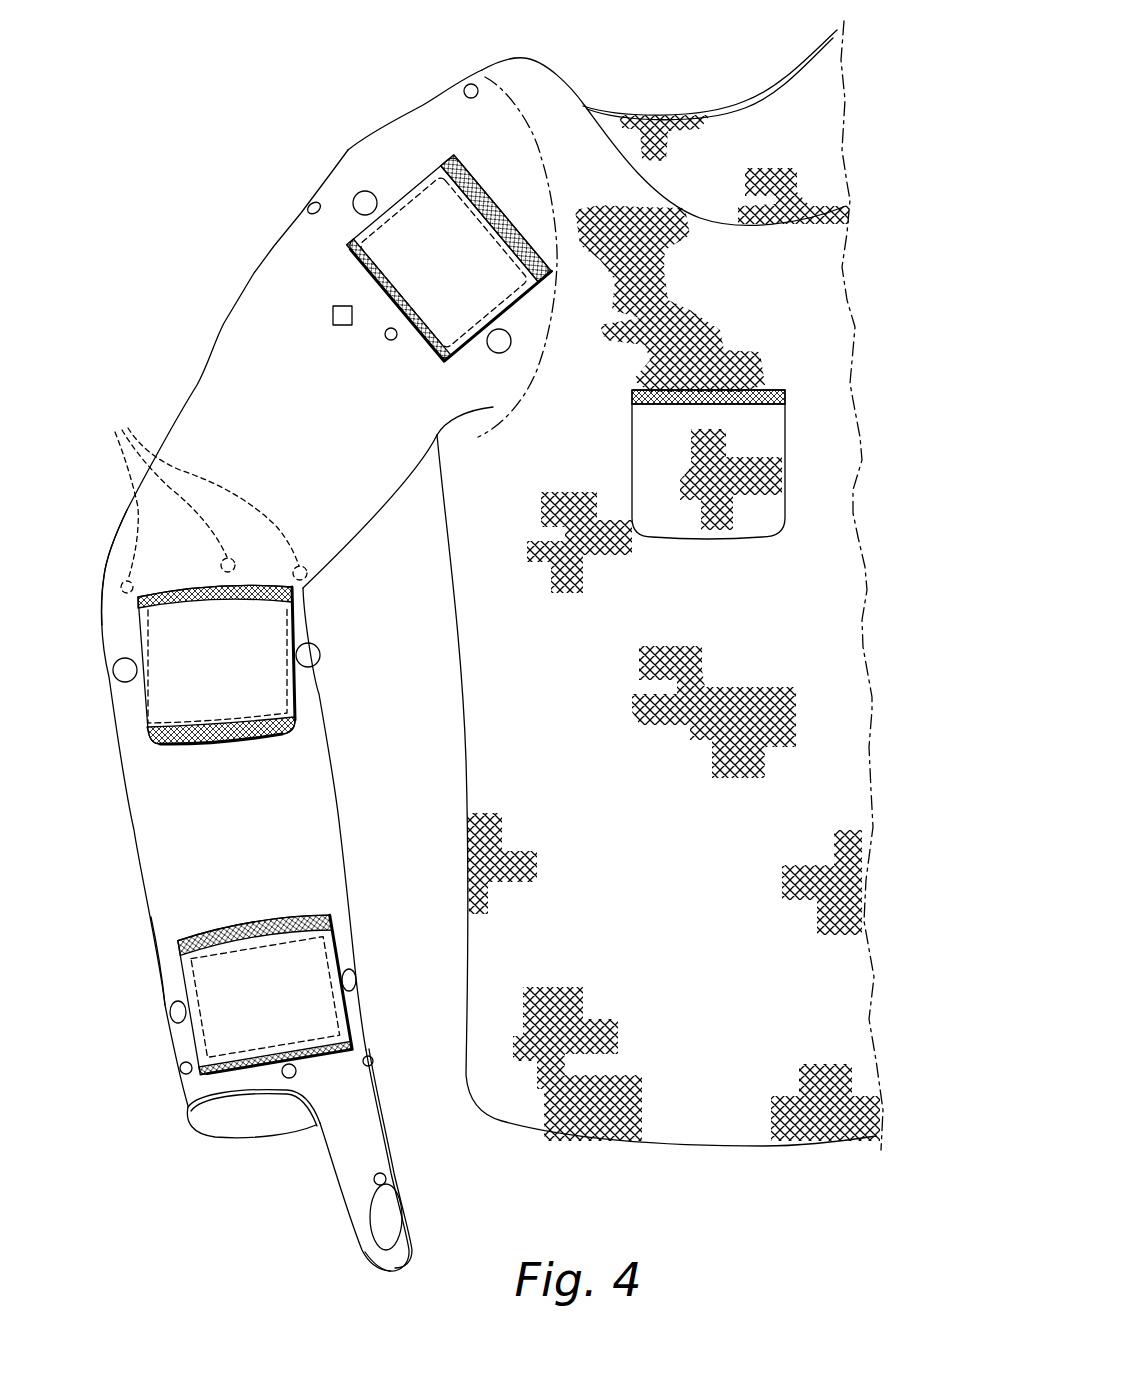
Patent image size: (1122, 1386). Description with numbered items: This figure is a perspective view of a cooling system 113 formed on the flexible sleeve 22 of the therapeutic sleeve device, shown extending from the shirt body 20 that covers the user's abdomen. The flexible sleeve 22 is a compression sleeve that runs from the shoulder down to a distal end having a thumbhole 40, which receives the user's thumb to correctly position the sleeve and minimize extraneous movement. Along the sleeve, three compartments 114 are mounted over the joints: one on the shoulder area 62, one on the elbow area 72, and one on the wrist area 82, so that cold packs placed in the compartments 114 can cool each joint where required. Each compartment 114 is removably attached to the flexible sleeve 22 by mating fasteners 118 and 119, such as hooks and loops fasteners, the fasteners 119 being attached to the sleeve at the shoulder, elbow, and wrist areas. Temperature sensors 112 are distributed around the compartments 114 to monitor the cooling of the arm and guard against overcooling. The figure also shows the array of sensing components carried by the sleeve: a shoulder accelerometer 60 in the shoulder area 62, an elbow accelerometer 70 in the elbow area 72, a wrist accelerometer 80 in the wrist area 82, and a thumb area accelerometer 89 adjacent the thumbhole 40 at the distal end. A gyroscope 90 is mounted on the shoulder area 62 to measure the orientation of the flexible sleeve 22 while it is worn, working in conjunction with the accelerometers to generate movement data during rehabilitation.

The shirt body 20 is at (485, 750).
The flexible sleeve 22 is at (197, 387).
The thumbhole 40 is at (370, 1235).
The shoulder accelerometer 60 is at (466, 85).
The shoulder area 62 is at (423, 105).
The elbow accelerometer 70 is at (205, 497).
The elbow area 72 is at (108, 573).
The wrist accelerometer 80 is at (181, 1068).
The wrist area 82 is at (165, 956).
The thumb area accelerometer 89 is at (386, 1179).
The gyroscope 90 is at (333, 316).
The temperature sensor 112 is at (363, 191).
The cooling system 113 is at (243, 115).
The compartment 114 is at (433, 196).
The fastener 118 is at (419, 341).
The fastener 119 is at (430, 356).